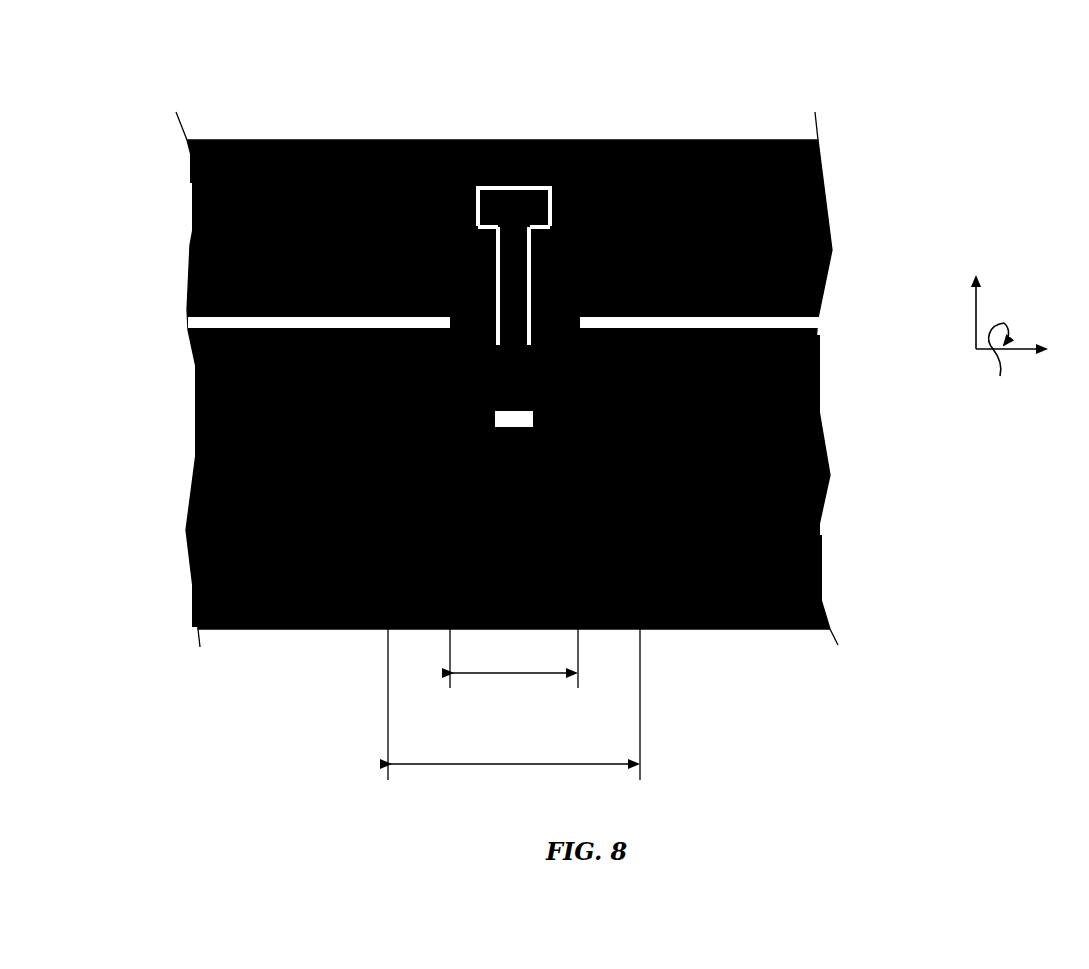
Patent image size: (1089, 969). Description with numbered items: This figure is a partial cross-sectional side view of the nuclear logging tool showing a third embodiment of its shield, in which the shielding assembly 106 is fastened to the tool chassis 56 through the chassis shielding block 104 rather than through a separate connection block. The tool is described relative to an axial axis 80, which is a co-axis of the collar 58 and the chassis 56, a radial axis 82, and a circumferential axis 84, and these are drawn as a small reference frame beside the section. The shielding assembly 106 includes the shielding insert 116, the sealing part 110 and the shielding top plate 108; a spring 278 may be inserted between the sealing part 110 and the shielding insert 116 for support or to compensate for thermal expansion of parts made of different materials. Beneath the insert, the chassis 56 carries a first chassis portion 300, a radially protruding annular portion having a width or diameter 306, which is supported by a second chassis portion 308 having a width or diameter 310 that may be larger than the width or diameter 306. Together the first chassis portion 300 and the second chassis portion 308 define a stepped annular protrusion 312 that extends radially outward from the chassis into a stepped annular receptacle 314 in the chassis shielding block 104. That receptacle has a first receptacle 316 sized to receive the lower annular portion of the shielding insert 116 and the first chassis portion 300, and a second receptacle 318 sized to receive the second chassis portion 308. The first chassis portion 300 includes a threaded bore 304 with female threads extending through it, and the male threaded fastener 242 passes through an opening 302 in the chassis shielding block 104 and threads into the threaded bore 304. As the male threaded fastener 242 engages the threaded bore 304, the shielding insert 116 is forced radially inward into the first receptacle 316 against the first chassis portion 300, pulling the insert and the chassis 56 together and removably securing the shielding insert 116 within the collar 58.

The shielding assembly 106 is at (352, 67).
The sealing part 110 is at (187, 141).
The shielding insert 116 is at (190, 240).
The opening 302 is at (190, 266).
The threaded bore 304 is at (300, 328).
The first chassis portion 300 is at (192, 338).
The second chassis portion 308 is at (203, 398).
The stepped annular receptacle 314 is at (200, 428).
The chassis 56 is at (190, 558).
The collar 58 is at (820, 162).
The male threaded fastener 242 is at (830, 268).
The first receptacle 316 is at (826, 420).
The chassis shielding block 104 is at (832, 479).
The stepped annular protrusion 312 is at (340, 632).
The second receptacle 318 is at (765, 632).
The spring 278 is at (432, 140).
The shielding top plate 108 is at (515, 140).
The width or diameter 306 is at (514, 674).
The width or diameter 310 is at (514, 765).
The axial axis 80 is at (1025, 346).
The radial axis 82 is at (974, 310).
The circumferential axis 84 is at (1000, 378).